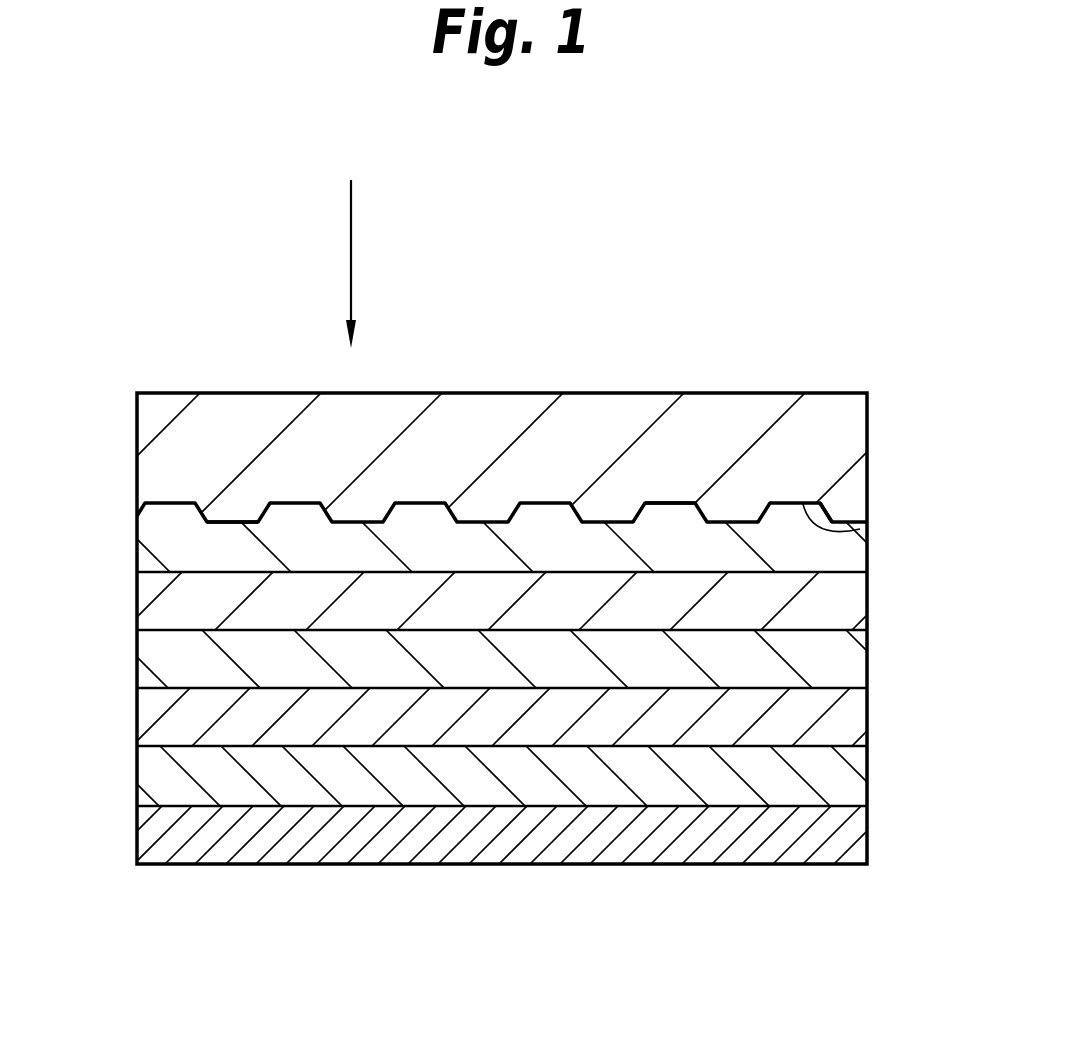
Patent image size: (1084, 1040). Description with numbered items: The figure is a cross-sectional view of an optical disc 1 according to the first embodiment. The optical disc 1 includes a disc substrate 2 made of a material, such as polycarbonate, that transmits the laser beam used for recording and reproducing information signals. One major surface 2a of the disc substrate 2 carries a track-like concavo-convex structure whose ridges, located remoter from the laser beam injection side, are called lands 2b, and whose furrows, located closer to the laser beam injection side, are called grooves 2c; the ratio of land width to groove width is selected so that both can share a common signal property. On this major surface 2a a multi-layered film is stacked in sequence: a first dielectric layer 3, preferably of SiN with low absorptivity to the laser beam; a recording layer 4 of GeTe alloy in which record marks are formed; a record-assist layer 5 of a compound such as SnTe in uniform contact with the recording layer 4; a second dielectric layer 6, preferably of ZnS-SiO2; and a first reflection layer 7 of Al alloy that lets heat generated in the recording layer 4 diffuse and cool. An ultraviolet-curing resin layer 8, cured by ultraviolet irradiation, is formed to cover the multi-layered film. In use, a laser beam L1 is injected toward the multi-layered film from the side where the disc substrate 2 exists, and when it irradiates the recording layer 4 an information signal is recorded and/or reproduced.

The optical disc 1 is at (519, 290).
The laser beam L1 is at (350, 246).
The disc substrate 2 is at (232, 437).
The major surface 2a is at (858, 533).
The land 2b is at (213, 524).
The groove 2c is at (667, 504).
The first dielectric layer 3 is at (732, 543).
The recording layer 4 is at (192, 607).
The record-assist layer 5 is at (412, 670).
The second dielectric layer 6 is at (605, 722).
The first reflection layer 7 is at (682, 762).
The ultraviolet-curing resin layer 8 is at (822, 823).